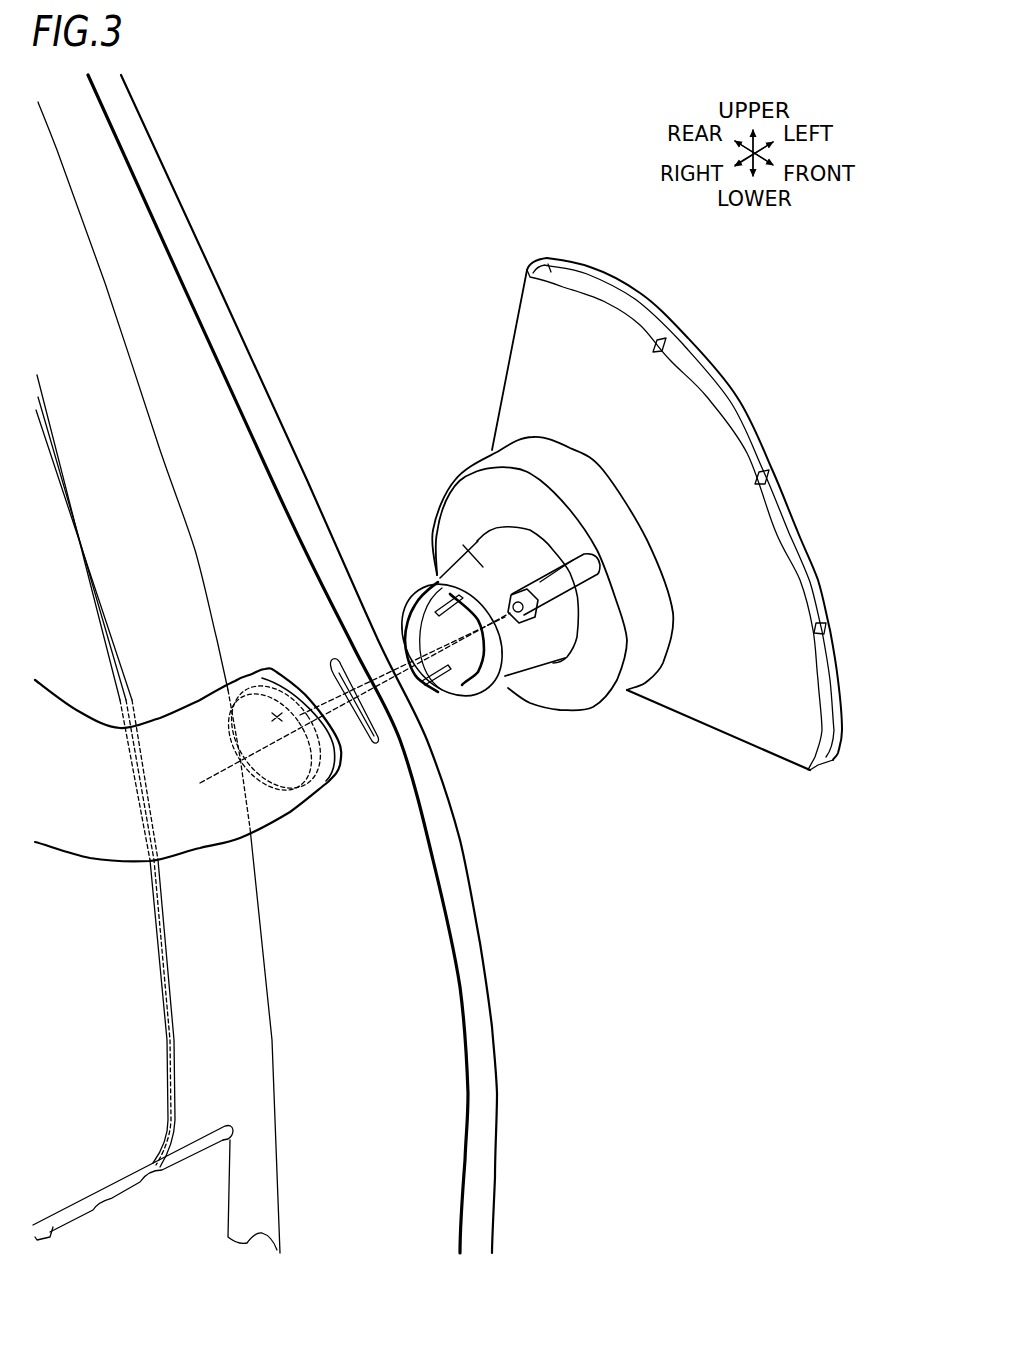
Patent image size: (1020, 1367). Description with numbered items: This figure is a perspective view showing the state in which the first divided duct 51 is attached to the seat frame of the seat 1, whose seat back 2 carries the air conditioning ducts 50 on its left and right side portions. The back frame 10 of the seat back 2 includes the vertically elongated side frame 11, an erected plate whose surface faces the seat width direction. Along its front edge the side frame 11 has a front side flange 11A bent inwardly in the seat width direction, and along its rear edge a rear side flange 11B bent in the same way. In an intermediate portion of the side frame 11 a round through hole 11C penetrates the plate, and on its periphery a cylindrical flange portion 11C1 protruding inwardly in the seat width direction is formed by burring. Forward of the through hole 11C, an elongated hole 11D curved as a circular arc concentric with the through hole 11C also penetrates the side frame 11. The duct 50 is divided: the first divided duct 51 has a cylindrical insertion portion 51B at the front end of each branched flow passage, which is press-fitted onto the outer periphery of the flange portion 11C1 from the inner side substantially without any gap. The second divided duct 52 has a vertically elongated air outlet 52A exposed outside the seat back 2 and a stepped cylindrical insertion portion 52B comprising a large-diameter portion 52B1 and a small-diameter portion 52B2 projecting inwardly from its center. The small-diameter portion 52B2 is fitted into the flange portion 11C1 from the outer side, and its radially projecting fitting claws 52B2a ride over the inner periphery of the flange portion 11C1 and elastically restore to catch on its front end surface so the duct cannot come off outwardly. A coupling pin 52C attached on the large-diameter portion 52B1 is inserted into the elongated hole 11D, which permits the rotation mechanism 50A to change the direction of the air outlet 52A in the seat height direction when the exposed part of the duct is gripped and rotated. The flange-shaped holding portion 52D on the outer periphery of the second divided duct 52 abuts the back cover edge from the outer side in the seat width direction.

The seat 1 is at (438, 509).
The seat back 2 is at (438, 509).
The back frame 10 is at (329, 664).
The side frame 11 is at (297, 677).
The front side flange 11A is at (480, 1035).
The rear side flange 11B is at (210, 1005).
The through hole 11C is at (278, 712).
The flange portion 11C1 is at (355, 742).
The elongated hole 11D is at (371, 746).
The air conditioning duct 50 is at (438, 586).
The rotation mechanism 50A is at (521, 719).
The first divided duct 51 is at (87, 817).
The insertion portion 51B is at (327, 753).
The second divided duct 52 is at (605, 522).
The air outlet 52A is at (722, 401).
The insertion portion 52B is at (484, 568).
The large-diameter portion 52B1 is at (473, 506).
The small-diameter portion 52B2 is at (432, 585).
The fitting claws 52B2a is at (458, 645).
The coupling pin 52C is at (593, 700).
The holding portion 52D is at (725, 662).